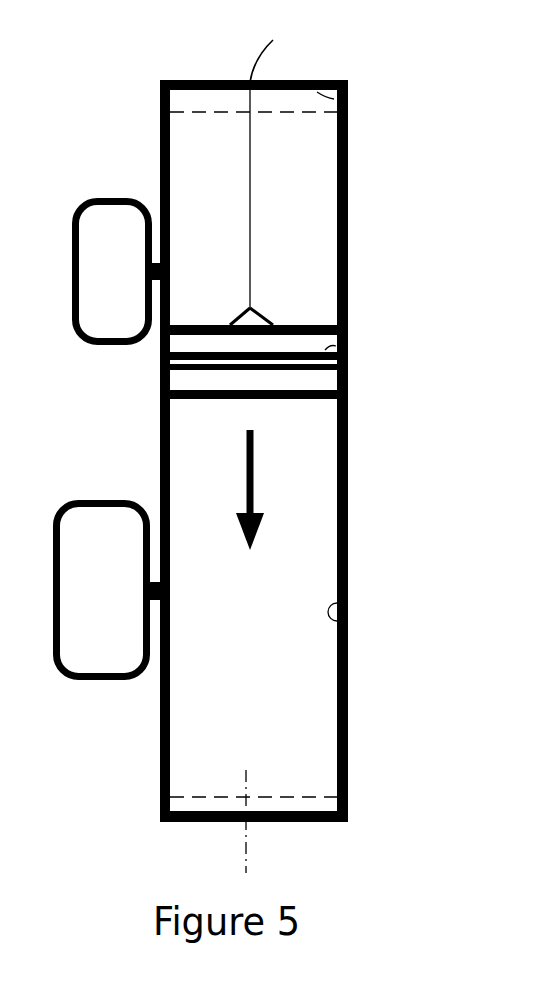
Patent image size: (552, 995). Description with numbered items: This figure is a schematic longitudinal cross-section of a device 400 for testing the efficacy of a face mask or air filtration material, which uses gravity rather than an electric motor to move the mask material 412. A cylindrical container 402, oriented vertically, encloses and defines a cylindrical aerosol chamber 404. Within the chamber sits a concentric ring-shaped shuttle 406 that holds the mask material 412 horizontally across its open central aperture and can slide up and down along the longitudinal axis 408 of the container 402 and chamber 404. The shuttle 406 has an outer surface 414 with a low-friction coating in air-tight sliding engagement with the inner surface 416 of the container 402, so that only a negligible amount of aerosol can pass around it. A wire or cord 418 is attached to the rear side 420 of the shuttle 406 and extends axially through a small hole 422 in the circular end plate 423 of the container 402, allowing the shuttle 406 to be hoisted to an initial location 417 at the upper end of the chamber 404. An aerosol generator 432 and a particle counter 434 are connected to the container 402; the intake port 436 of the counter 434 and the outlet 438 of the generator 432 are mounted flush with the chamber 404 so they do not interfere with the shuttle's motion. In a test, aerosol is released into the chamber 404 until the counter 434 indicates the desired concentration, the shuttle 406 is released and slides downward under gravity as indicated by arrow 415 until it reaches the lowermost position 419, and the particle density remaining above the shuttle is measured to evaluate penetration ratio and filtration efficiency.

The device 400 is at (418, 797).
The cylindrical container 402 is at (348, 540).
The cylindrical aerosol chamber 404 is at (272, 672).
The shuttle 406 is at (313, 325).
The longitudinal axis 408 is at (247, 835).
The mask material 412 is at (325, 350).
The outer surface 414 is at (347, 375).
The arrow 415 is at (253, 487).
The inner surface 416 is at (345, 622).
The initial or starting location 417 is at (305, 112).
The wire or cord 418 is at (257, 237).
The lowermost position 419 is at (310, 797).
The rear side 420 is at (287, 325).
The small hole 422 is at (252, 79).
The circular end plate 423 is at (345, 94).
The aerosol generator 432 is at (98, 680).
The particle counter 434 is at (100, 345).
The intake port 436 is at (155, 262).
The outlet 438 is at (155, 578).